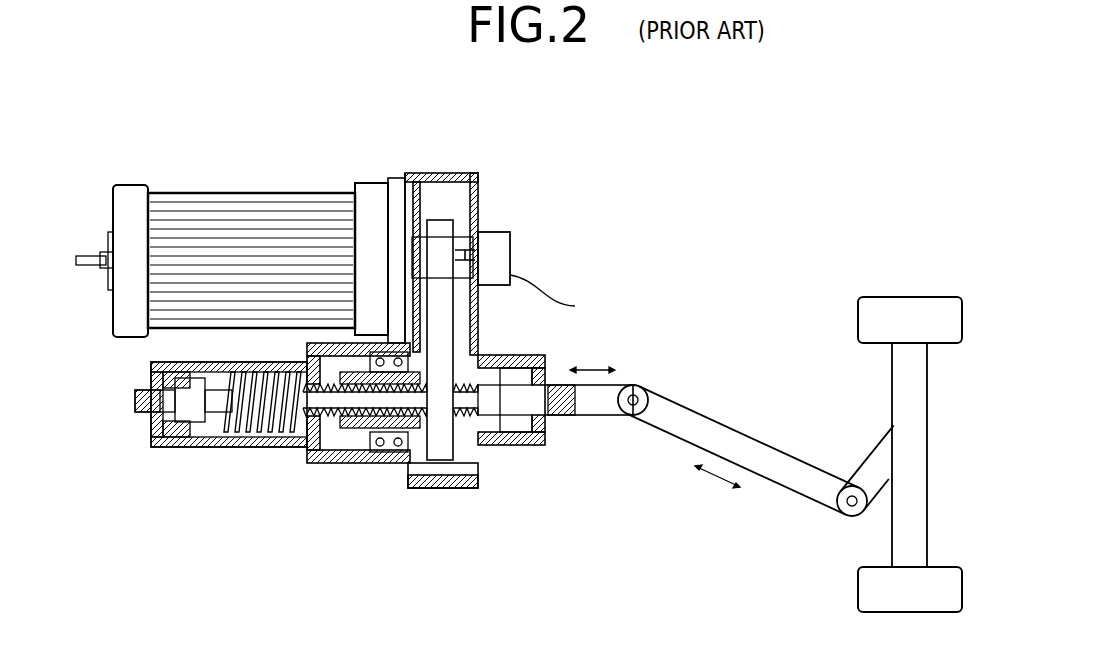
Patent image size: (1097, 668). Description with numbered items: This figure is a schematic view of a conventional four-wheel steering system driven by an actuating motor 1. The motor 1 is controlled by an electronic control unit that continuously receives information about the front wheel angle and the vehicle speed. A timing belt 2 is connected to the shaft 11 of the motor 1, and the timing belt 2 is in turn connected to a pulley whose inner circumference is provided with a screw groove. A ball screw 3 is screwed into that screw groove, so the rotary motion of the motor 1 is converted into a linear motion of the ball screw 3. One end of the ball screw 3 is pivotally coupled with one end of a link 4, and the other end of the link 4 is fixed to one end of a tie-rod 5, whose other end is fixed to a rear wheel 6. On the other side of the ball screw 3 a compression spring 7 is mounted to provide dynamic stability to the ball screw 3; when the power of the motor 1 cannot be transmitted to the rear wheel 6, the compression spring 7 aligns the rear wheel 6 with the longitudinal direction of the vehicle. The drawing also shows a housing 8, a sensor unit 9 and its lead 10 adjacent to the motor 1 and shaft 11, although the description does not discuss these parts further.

The motor 1 is at (237, 193).
The timing belt 2 is at (437, 488).
The ball screw 3 is at (325, 460).
The link 4 is at (690, 410).
The tie-rod 5 is at (872, 452).
The rear wheel 6 is at (903, 517).
The compression spring 7 is at (245, 447).
The housing 8 is at (435, 172).
The sensor 9 is at (480, 237).
The lead wire 10 is at (573, 283).
The shaft 11 is at (470, 228).